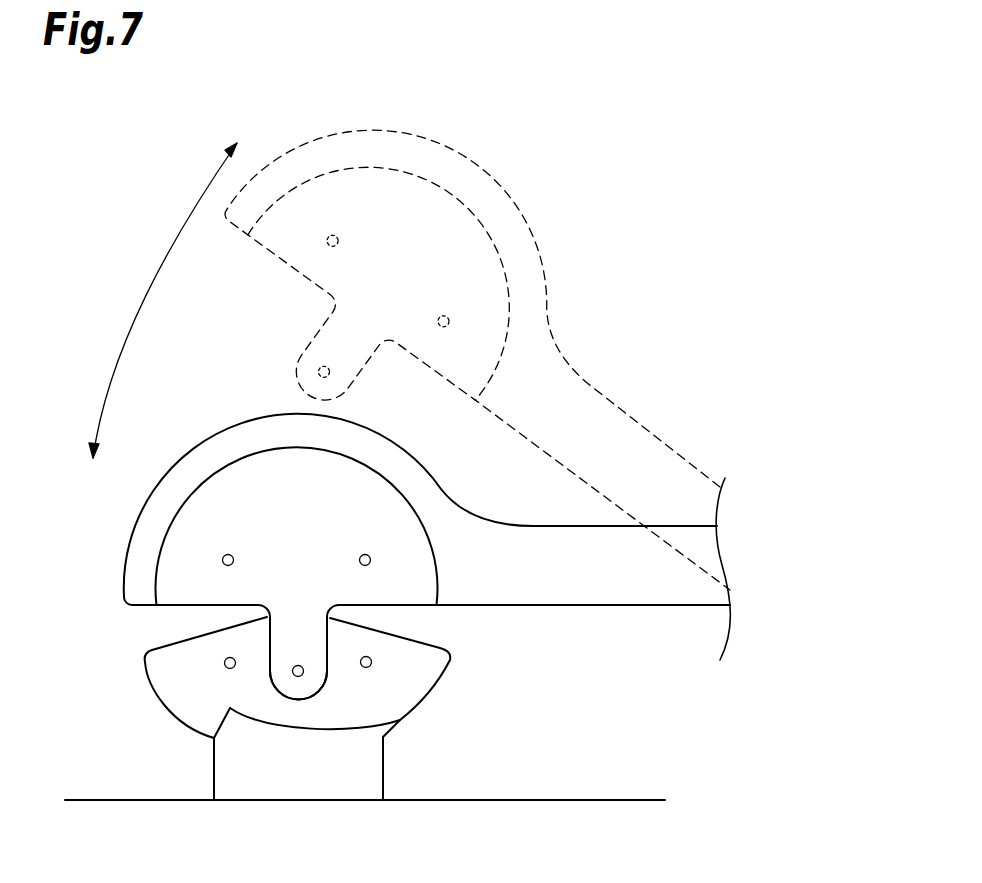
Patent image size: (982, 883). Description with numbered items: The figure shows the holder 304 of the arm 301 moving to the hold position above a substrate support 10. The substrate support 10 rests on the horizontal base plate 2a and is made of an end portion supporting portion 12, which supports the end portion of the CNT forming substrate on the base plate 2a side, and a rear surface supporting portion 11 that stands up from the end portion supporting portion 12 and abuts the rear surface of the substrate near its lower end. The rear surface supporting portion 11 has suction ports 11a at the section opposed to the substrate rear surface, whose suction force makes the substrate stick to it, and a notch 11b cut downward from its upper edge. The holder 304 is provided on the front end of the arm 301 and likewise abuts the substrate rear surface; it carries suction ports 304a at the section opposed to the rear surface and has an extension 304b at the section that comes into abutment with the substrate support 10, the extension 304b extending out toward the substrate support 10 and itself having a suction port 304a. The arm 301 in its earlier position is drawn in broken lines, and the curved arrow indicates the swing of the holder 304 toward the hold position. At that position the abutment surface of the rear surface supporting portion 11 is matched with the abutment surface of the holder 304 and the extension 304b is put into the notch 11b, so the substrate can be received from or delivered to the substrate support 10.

The base plate 2a is at (590, 800).
The substrate support 10 is at (307, 746).
The rear surface supporting portion 11 is at (202, 707).
The suction ports 11a is at (224, 662).
The notch 11b is at (296, 678).
The end portion supporting portion 12 is at (348, 730).
The arm 301 is at (592, 387).
The holder 304 is at (190, 537).
The suction ports 304a is at (228, 554).
The extension 304b is at (290, 643).